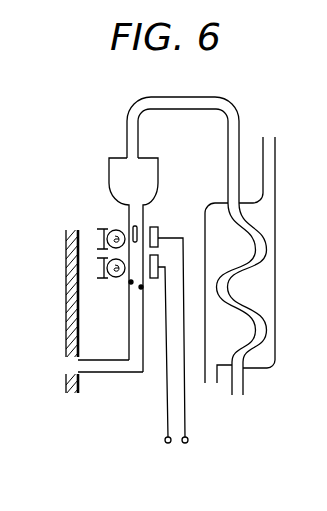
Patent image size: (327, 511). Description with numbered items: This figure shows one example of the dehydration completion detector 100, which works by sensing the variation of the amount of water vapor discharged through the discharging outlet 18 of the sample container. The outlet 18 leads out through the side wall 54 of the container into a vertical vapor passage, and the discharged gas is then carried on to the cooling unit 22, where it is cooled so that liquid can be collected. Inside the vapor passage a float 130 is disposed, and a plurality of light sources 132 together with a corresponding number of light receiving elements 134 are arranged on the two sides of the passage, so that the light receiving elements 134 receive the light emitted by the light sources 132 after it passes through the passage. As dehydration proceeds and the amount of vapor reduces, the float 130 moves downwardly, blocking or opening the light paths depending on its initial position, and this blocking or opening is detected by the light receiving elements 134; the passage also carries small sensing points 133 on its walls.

The detector 100 is at (118, 427).
The discharging outlet 18 is at (70, 371).
The cooling unit 22 is at (276, 212).
The side wall 54 is at (66, 281).
The float 130 is at (131, 228).
The light sources 132 is at (115, 279).
The electrodes 133 is at (142, 289).
The light receiving elements 134 is at (153, 226).